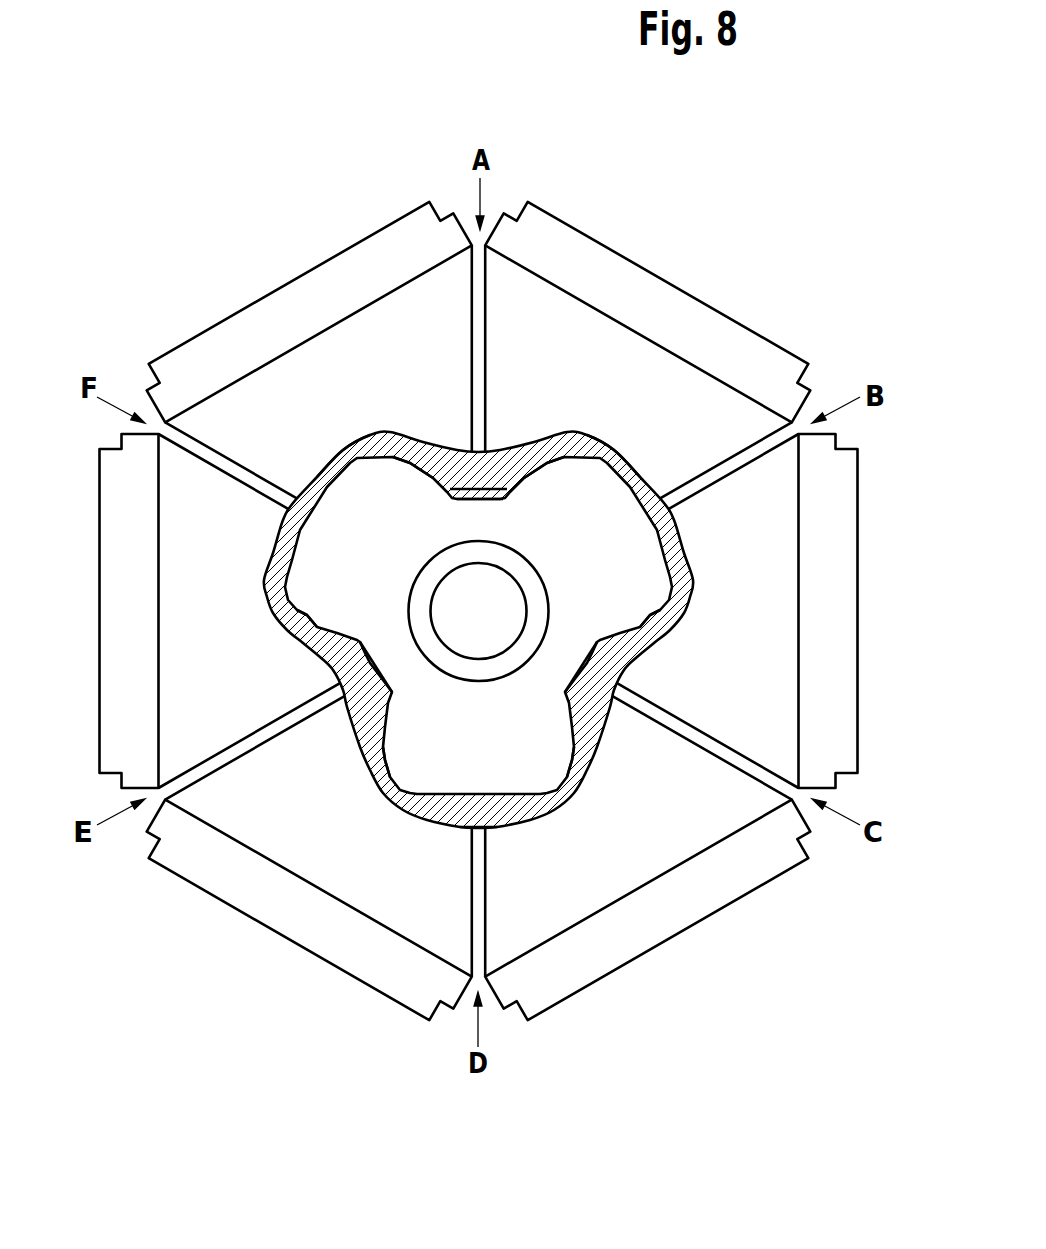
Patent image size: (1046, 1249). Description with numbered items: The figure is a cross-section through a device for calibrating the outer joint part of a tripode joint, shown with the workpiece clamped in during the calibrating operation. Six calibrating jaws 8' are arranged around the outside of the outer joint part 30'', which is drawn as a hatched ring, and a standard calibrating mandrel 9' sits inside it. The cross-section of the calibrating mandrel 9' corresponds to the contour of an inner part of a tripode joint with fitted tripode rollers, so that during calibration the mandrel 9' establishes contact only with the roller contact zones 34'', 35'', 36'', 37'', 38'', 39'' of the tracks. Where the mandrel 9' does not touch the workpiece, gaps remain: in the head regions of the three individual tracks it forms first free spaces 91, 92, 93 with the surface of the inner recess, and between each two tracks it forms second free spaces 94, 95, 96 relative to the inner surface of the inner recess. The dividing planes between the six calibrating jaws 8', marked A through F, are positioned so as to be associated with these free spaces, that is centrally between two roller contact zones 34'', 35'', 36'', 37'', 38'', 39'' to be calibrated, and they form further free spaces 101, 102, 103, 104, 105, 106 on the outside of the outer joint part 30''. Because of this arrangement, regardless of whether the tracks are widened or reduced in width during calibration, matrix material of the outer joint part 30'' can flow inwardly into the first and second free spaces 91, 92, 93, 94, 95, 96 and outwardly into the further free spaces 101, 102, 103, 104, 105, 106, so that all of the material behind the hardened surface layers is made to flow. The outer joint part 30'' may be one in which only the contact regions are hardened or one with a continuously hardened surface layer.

The calibrating jaw 8' is at (516, 611).
The calibrating mandrel 9' is at (586, 611).
The outer joint part 30'' is at (508, 529).
The roller contact zone 34'' is at (377, 422).
The roller contact zone 35'' is at (251, 615).
The roller contact zone 36'' is at (707, 636).
The roller contact zone 37'' is at (574, 420).
The roller contact zone 38'' is at (357, 800).
The roller contact zone 39'' is at (607, 800).
The first free space 91 is at (303, 472).
The first free space 92 is at (648, 470).
The first free space 93 is at (493, 807).
The second free space 94 is at (492, 488).
The second free space 95 is at (587, 662).
The second free space 96 is at (370, 662).
The further free space 101 is at (283, 498).
The further free space 102 is at (680, 498).
The further free space 103 is at (470, 828).
The further free space 104 is at (478, 443).
The further free space 105 is at (624, 693).
The further free space 106 is at (333, 693).